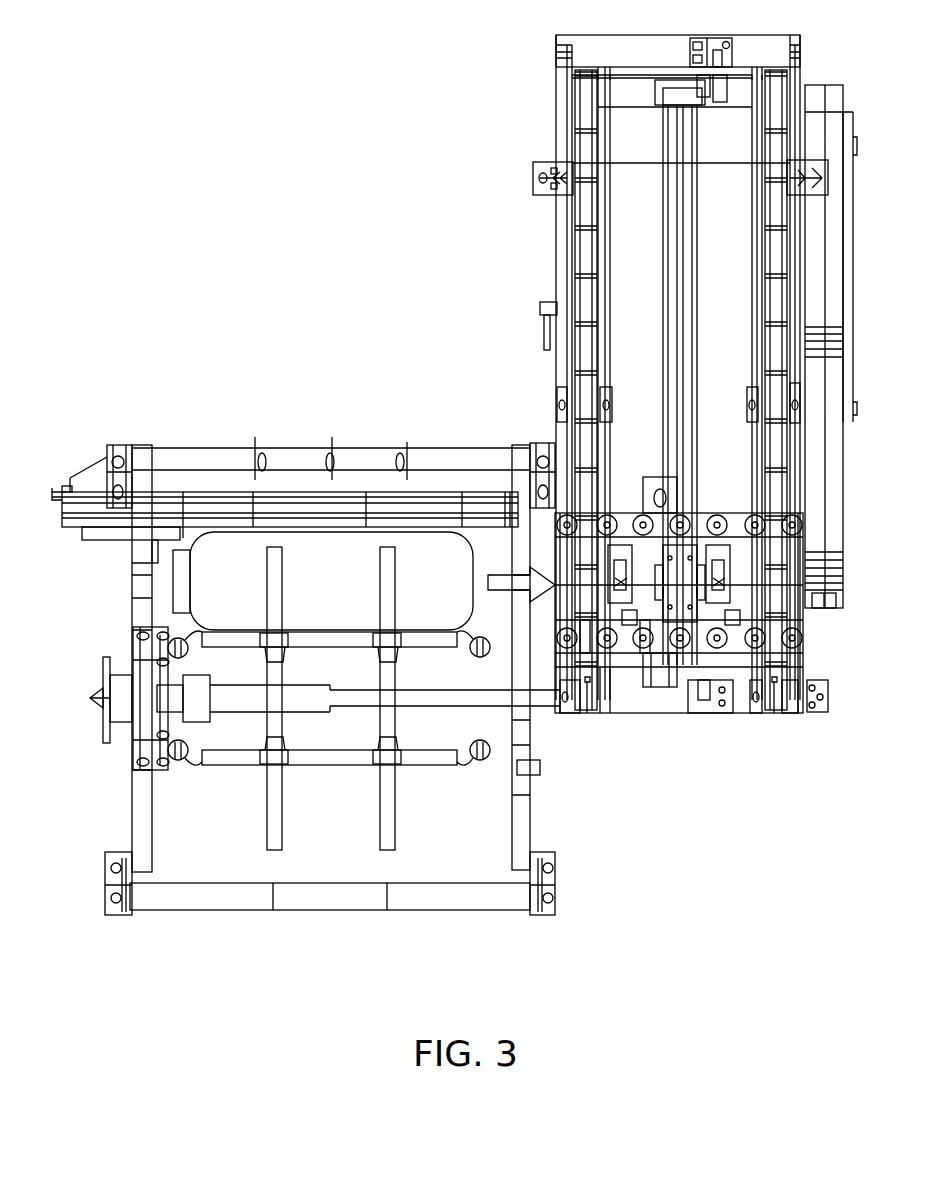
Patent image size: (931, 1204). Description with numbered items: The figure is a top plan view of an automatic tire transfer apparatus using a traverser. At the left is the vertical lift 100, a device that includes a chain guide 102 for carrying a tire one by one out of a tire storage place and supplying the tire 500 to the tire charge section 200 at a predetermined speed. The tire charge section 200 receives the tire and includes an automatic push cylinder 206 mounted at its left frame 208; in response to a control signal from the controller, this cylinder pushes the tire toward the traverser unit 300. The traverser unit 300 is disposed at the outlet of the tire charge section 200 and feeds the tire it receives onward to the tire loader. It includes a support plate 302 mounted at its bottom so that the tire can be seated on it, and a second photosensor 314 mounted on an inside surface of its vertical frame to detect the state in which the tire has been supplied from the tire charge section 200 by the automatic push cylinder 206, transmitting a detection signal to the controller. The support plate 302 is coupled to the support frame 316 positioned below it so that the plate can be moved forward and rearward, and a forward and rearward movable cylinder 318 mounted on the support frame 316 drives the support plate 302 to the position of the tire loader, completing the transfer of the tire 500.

The vertical lift 100 is at (140, 797).
The chain guide 102 is at (232, 752).
The tire charge section 200 is at (362, 424).
The automatic push cylinder 206 is at (86, 523).
The left frame 208 is at (140, 556).
The traverser unit 300 is at (776, 736).
The support plate 302 is at (730, 548).
The second photosensor 314 is at (650, 492).
The support frame 316 is at (588, 250).
The forward and rearward movable cylinder 318 is at (672, 206).
The tire 500 is at (352, 587).